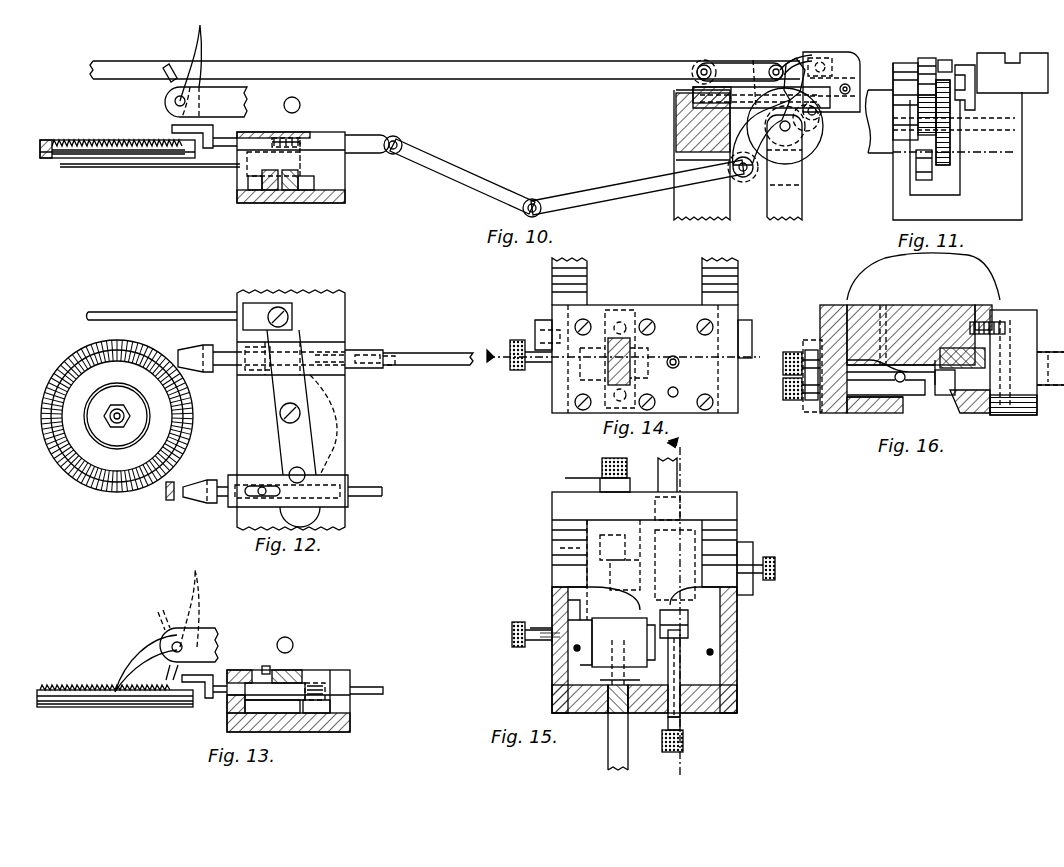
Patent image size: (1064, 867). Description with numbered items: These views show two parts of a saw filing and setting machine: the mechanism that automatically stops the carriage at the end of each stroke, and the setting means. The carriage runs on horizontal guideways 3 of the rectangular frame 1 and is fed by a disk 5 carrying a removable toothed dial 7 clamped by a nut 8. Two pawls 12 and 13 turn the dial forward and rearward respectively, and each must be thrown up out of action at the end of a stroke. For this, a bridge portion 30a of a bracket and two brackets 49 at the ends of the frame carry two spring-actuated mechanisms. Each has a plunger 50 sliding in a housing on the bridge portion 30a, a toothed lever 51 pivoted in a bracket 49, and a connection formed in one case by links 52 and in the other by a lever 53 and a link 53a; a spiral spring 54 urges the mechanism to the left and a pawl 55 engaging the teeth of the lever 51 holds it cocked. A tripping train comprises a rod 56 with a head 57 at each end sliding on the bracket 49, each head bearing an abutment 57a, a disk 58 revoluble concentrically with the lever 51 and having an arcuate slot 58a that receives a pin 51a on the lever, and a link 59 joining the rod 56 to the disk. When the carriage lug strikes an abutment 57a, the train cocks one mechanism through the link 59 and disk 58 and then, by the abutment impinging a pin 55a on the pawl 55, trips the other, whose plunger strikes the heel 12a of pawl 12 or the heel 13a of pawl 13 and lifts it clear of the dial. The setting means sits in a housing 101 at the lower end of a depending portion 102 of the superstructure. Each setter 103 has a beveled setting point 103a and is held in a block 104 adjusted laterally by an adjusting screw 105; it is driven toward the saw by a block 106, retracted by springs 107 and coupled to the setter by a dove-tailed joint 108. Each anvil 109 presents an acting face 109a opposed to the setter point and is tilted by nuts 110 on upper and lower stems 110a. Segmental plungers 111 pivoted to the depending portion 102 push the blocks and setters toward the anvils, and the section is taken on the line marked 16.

In FIG. 10, the rectangular frame 1 is at (676, 207).
In FIG. 11, the horizontal superposed guideways 3 is at (1028, 54).
In FIG. 10, the disk 5 is at (43, 158).
In FIG. 13, the disk 5 is at (44, 708).
In FIG. 10, the removable dial 7 is at (82, 141).
In FIG. 12, the removable dial 7 is at (48, 461).
In FIG. 13, the removable dial 7 is at (76, 689).
In FIG. 12, the nut 8 is at (118, 430).
In FIG. 13, the pawl 12 is at (144, 650).
In FIG. 12, the heel 12a is at (170, 501).
In FIG. 10, the pawl 13 is at (203, 44).
In FIG. 10, the heel 13a is at (166, 86).
In FIG. 14, the shaft 16 is at (623, 402).
In FIG. 15, the shaft 16 is at (684, 608).
In FIG. 10, the bridge portion 30a is at (345, 197).
In FIG. 12, the bridge portion 30a is at (345, 319).
In FIG. 13, the bridge portion 30a is at (318, 733).
In FIG. 10, the bracket 49 is at (812, 205).
In FIG. 11, the bracket 49 is at (908, 192).
In FIG. 10, the plunger 50 is at (206, 127).
In FIG. 12, the plunger 50 is at (206, 373).
In FIG. 13, the plunger 50 is at (208, 700).
In FIG. 10, the toothed lever 51 is at (748, 178).
In FIG. 11, the toothed lever 51 is at (914, 148).
In FIG. 10, the pin 51a is at (755, 62).
In FIG. 10, the links 52 is at (537, 199).
In FIG. 12, the links 52 is at (441, 353).
In FIG. 10, the lever 53 is at (367, 144).
In FIG. 12, the lever 53 is at (308, 442).
In FIG. 13, the lever 53 is at (350, 708).
In FIG. 10, the link 53a is at (116, 168).
In FIG. 12, the link 53a is at (150, 321).
In FIG. 10, the spiral spring 54 is at (305, 138).
In FIG. 12, the spiral spring 54 is at (343, 405).
In FIG. 13, the spiral spring 54 is at (311, 673).
In FIG. 10, the pawl 55 is at (797, 66).
In FIG. 11, the pawl 55 is at (928, 58).
In FIG. 10, the pin 55a is at (824, 112).
In FIG. 11, the pin 55a is at (937, 58).
In FIG. 10, the rod 56 is at (420, 66).
In FIG. 10, the head or block 57 is at (852, 56).
In FIG. 11, the head or block 57 is at (963, 64).
In FIG. 10, the abutment 57a is at (823, 58).
In FIG. 11, the abutment 57a is at (946, 58).
In FIG. 10, the disk 58 is at (818, 148).
In FIG. 11, the disk 58 is at (950, 160).
In FIG. 10, the arcuate slot 58a is at (822, 130).
In FIG. 10, the link 59 is at (784, 64).
In FIG. 14, the housing 101 is at (750, 386).
In FIG. 15, the housing 101 is at (738, 630).
In FIG. 16, the housing 101 is at (862, 315).
In FIG. 14, the depending portion 102 is at (740, 284).
In FIG. 15, the depending portion 102 is at (552, 574).
In FIG. 15, the setter 103 is at (560, 600).
In FIG. 16, the setter 103 is at (962, 412).
In FIG. 16, the setting point 103a is at (939, 396).
In FIG. 15, the block 104 is at (592, 655).
In FIG. 16, the block 104 is at (945, 355).
In FIG. 15, the adjusting screw 105 is at (518, 648).
In FIG. 16, the adjusting screw 105 is at (965, 346).
In FIG. 15, the block 106 is at (700, 500).
In FIG. 16, the block 106 is at (1030, 350).
In FIG. 16, the springs 107 is at (1005, 320).
In FIG. 16, the dove-tailed joint 108 is at (1010, 415).
In FIG. 15, the anvil 109 is at (552, 548).
In FIG. 16, the anvil 109 is at (906, 400).
In FIG. 16, the acting face 109a is at (913, 330).
In FIG. 14, the nuts 110 is at (517, 372).
In FIG. 16, the nuts 110 is at (812, 343).
In FIG. 16, the upper and lower stems 110a is at (845, 413).
In FIG. 14, the segmental plungers 111 is at (635, 353).
In FIG. 15, the segmental plungers 111 is at (602, 466).
In FIG. 16, the segmental plungers 111 is at (1040, 416).